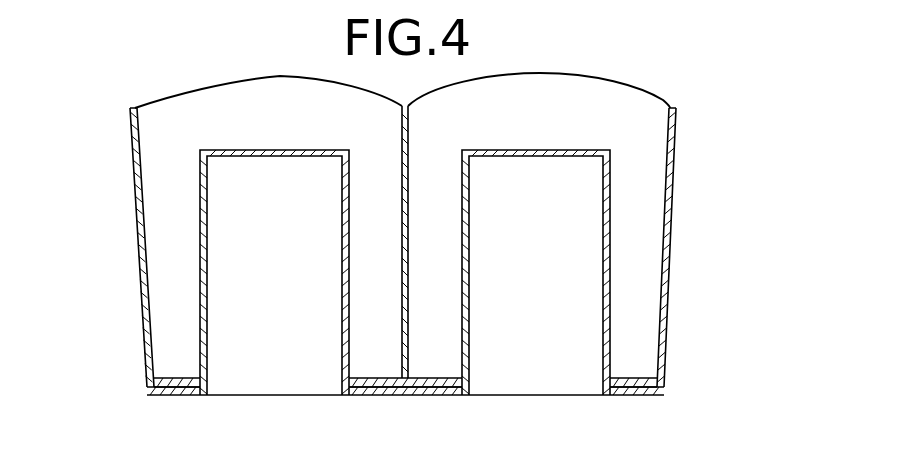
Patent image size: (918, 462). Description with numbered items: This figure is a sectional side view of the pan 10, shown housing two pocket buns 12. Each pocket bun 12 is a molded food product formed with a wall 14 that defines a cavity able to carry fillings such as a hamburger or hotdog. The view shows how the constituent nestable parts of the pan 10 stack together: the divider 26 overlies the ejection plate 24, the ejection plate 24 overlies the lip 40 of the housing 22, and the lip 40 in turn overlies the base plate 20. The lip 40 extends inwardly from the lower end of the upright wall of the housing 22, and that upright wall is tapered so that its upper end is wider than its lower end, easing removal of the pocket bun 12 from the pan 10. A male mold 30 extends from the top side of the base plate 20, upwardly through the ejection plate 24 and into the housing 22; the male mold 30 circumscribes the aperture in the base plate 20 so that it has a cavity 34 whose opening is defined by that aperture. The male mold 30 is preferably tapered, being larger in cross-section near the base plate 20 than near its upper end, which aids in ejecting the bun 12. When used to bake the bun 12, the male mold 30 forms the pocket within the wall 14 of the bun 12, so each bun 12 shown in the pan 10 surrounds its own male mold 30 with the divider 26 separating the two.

The pan 10 is at (415, 232).
The pocket bun 12 is at (615, 72).
The wall 14 is at (358, 92).
The base plate 20 is at (165, 395).
The housing 22 is at (677, 130).
The ejection plate 24 is at (180, 379).
The divider 26 is at (409, 137).
The male mold 30 is at (208, 234).
The cavity 34 is at (558, 252).
The lip 40 is at (405, 424).